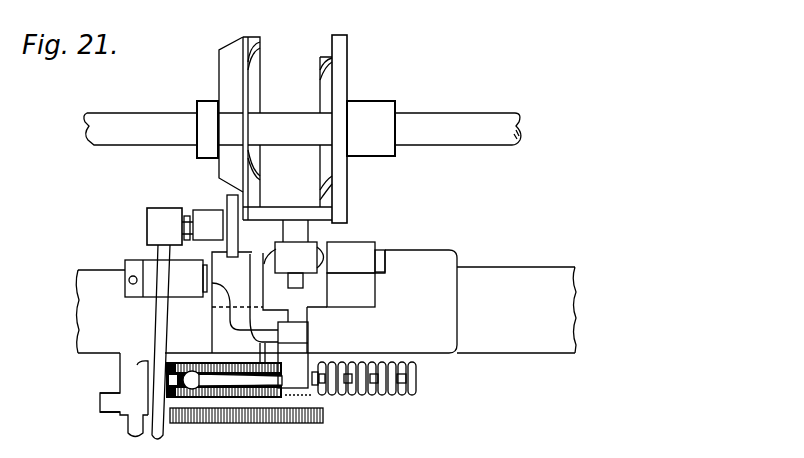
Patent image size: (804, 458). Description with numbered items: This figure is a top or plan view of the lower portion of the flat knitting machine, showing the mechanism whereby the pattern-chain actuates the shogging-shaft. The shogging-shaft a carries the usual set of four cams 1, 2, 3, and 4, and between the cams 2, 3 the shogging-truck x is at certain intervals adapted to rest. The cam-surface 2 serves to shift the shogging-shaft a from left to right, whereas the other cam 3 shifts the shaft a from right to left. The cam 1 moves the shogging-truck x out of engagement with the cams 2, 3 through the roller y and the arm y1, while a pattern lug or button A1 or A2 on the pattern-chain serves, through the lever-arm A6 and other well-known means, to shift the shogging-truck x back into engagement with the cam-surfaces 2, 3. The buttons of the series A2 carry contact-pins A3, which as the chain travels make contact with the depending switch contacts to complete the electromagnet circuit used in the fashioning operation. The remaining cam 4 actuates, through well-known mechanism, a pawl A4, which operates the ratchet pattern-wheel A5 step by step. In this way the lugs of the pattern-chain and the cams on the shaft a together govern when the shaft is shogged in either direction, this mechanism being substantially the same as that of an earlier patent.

The cam 1 is at (347, 47).
The cam 2 is at (328, 56).
The cam 3 is at (251, 40).
The cam 4 is at (226, 72).
The shogging-shaft a is at (84, 132).
The shogging-truck x is at (286, 212).
The roller y is at (355, 250).
The arm y1 is at (297, 283).
The pattern lug or button A1 is at (371, 392).
The pattern lug or button A2 is at (410, 378).
The contact-pin A3 is at (403, 396).
The pawl A4 is at (126, 399).
The ratchet pattern-wheel A5 is at (283, 419).
The lever-arm A6 is at (237, 378).